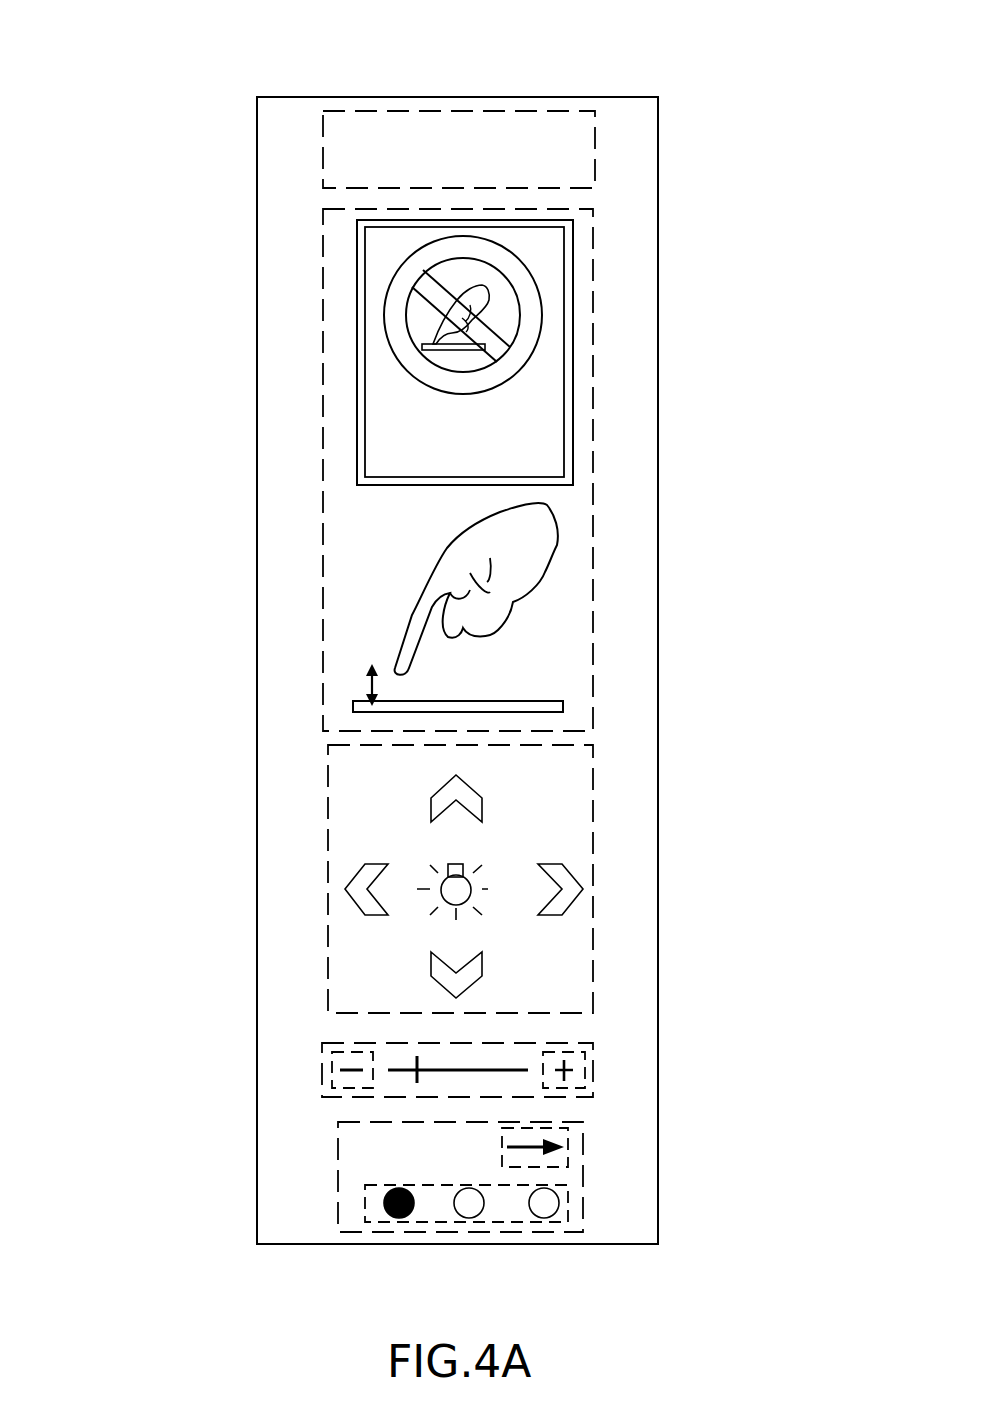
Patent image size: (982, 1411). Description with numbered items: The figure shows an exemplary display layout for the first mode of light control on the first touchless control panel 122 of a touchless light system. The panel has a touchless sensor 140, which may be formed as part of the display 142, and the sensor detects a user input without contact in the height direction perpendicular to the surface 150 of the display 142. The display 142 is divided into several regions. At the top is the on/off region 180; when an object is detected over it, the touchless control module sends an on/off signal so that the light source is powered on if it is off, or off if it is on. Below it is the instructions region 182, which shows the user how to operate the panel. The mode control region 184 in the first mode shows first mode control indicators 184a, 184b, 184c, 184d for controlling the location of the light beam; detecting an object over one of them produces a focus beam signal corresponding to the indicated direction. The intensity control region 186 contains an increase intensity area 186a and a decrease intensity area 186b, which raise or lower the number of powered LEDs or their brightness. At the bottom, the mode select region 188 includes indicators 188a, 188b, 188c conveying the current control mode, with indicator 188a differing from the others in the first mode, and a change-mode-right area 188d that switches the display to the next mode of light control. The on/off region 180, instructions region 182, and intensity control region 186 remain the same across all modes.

The first touchless control panel 122 is at (190, 112).
The touchless sensor 140 is at (658, 165).
The display 142 is at (257, 345).
The surface 150 is at (311, 144).
The on/off region 180 is at (572, 130).
The instructions region 182 is at (581, 498).
The mode control region 184 is at (412, 879).
The first mode control indicator 184a is at (447, 803).
The first mode control indicator 184b is at (363, 889).
The first mode control indicator 184c is at (565, 889).
The first mode control indicator 184d is at (467, 970).
The intensity control region 186 is at (458, 1044).
The increase intensity area 186a is at (577, 1060).
The decrease intensity area 186b is at (340, 1055).
The mode select region 188 is at (530, 1220).
The indicator 188a is at (399, 1218).
The indicator 188b is at (469, 1218).
The indicator 188c is at (544, 1218).
The change-mode-right area 188d is at (568, 1137).